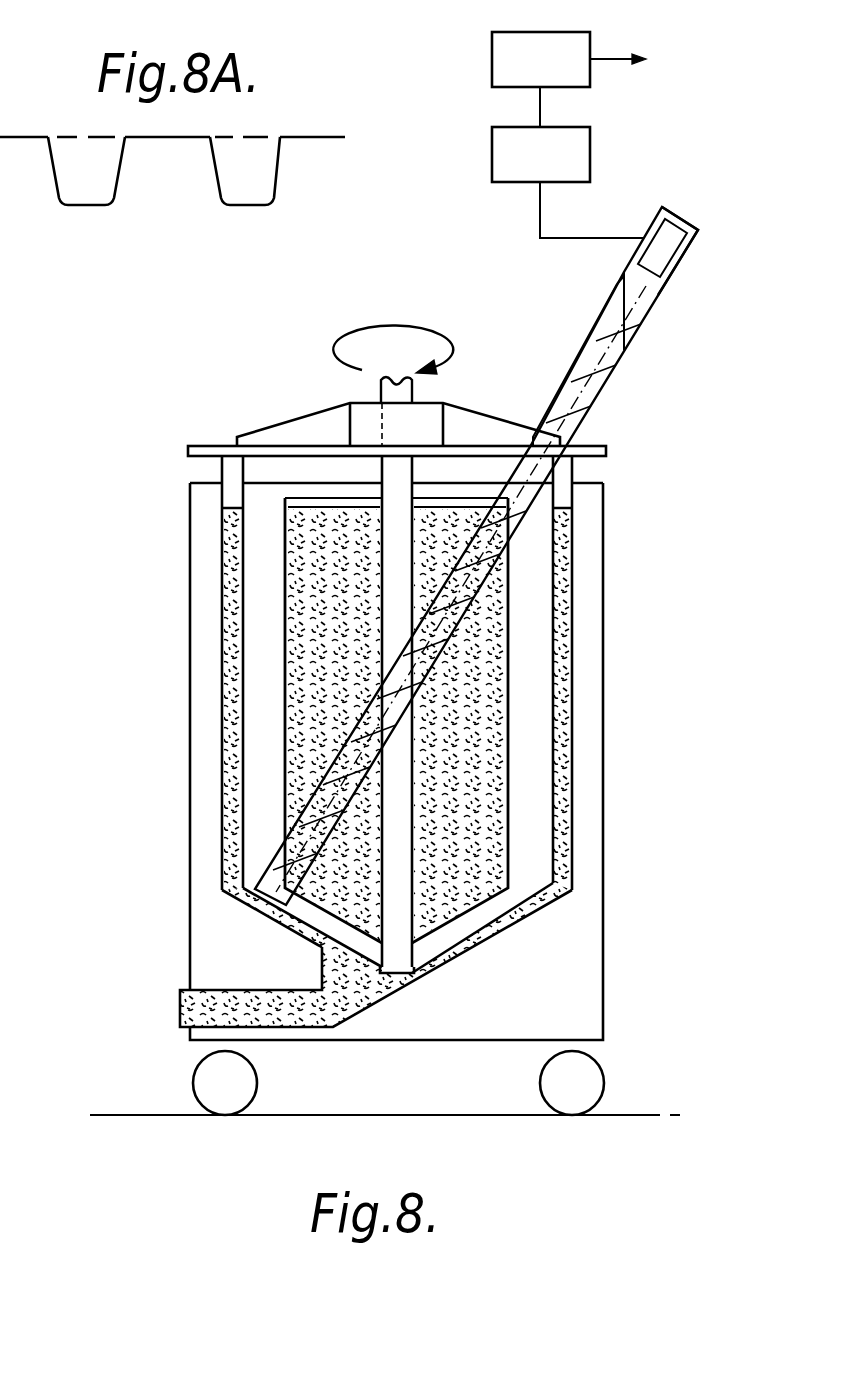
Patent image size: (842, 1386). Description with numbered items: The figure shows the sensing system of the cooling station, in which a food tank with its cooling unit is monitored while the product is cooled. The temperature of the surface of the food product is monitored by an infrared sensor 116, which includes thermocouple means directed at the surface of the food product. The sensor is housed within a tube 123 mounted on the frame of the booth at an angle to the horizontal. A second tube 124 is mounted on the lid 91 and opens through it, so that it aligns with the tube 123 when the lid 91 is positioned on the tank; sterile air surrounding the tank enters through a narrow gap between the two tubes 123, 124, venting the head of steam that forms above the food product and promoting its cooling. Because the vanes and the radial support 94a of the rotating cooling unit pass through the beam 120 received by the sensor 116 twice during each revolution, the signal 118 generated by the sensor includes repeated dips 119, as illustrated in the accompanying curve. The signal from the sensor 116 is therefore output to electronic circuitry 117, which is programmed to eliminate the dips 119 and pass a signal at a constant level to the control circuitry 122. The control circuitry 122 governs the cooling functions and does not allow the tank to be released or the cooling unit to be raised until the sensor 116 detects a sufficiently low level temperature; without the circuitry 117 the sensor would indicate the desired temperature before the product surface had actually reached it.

In FIG. 8, the lid 91 is at (471, 445).
In FIG. 8, the radial support 94a is at (310, 482).
In FIG. 8, the infrared sensor 116 is at (667, 277).
In FIG. 8, the electronic circuitry 117 is at (558, 173).
In FIG. 8A, the signal 118 is at (315, 137).
In FIG. 8A, the dips 119 is at (275, 183).
In FIG. 8, the beam 120 is at (558, 457).
In FIG. 8, the control circuitry 122 is at (558, 71).
In FIG. 8, the tube 123 is at (683, 216).
In FIG. 8, the tube 124 is at (598, 403).